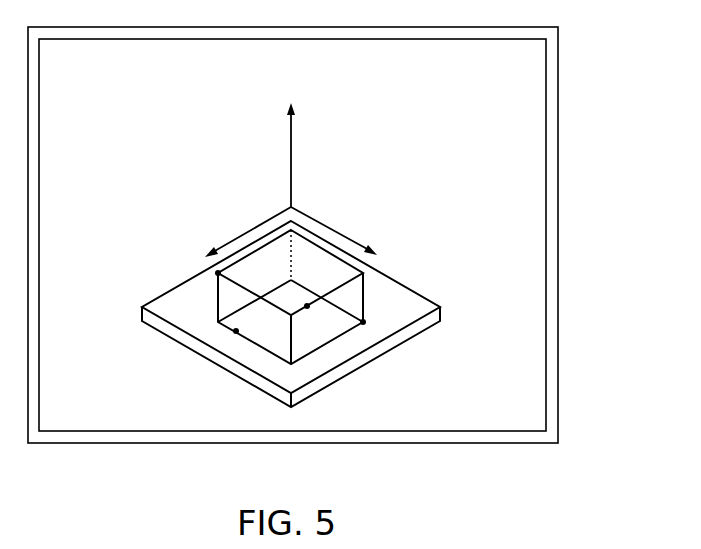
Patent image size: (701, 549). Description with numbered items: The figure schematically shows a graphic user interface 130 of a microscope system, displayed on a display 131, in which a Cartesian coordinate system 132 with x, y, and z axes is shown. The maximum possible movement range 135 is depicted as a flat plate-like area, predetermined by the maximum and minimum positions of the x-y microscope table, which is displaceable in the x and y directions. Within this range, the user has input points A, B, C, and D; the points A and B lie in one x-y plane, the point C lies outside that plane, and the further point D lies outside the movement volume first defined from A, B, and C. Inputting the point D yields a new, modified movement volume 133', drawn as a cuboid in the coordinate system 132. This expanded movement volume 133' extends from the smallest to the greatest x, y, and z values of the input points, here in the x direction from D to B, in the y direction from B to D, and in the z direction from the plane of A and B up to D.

The graphic user interface 130 is at (98, 85).
The display 131 is at (577, 84).
The coordinate system 132 is at (291, 173).
The modified movement volume 133' is at (328, 297).
The maximum possible movement range 135 is at (180, 300).